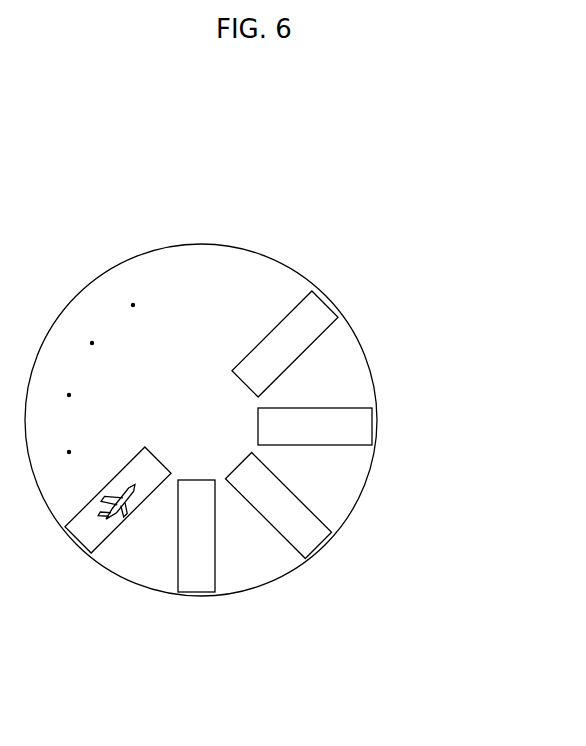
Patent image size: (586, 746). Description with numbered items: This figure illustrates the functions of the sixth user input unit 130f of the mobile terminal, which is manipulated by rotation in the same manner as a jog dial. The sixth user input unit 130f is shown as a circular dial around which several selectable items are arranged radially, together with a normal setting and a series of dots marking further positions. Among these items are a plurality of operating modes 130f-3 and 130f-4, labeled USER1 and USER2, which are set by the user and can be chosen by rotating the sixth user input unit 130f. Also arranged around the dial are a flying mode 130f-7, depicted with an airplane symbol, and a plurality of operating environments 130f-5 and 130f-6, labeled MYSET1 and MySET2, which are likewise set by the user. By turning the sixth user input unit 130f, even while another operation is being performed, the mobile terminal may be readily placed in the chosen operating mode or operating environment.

The sixth user input unit 130f is at (348, 199).
The operating mode 130f-3 is at (326, 303).
The operating mode 130f-4 is at (372, 425).
The operating environment 130f-5 is at (320, 547).
The operating environment 130f-6 is at (193, 593).
The flying mode 130f-7 is at (71, 542).